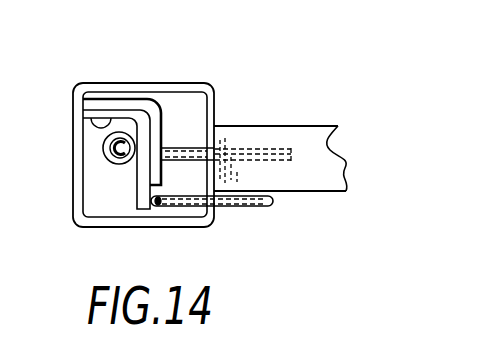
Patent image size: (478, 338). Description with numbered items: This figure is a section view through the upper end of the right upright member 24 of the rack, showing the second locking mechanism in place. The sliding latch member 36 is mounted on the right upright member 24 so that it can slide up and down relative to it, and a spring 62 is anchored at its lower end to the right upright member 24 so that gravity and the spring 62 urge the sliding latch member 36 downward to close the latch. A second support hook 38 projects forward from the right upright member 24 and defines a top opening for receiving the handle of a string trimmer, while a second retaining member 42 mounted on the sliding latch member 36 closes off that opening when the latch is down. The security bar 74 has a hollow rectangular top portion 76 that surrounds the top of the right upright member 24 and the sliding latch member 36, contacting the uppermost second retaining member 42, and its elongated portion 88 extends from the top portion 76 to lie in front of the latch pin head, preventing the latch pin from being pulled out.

The right upright member 24 is at (85, 118).
The sliding latch member 36 is at (112, 99).
The second support hook 38 is at (273, 203).
The second retaining member 42 is at (183, 148).
The spring 62 is at (105, 152).
The security bar 74 is at (313, 126).
The hollow rectangular top portion 76 is at (187, 83).
The elongated portion 88 is at (330, 147).